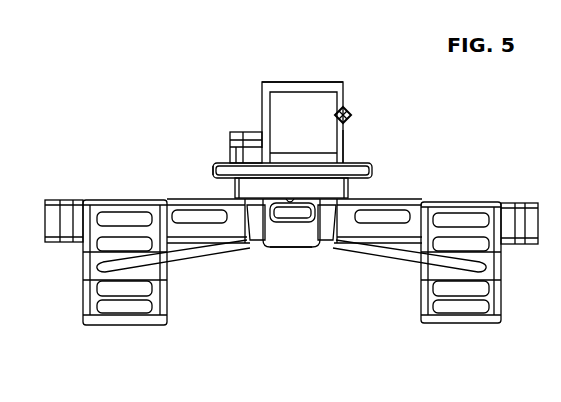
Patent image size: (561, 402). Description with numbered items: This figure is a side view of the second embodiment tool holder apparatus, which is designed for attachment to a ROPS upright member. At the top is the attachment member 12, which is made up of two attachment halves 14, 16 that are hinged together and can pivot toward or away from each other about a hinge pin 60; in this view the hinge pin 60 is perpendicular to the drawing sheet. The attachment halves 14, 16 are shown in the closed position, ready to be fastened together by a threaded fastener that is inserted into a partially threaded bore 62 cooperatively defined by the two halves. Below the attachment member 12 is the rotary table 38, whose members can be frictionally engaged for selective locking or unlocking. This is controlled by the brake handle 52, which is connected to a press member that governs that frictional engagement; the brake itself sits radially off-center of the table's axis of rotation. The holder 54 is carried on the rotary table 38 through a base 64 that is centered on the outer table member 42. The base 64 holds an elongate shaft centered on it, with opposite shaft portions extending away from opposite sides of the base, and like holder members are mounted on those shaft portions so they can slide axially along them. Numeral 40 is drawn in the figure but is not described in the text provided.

The attachment member 12 is at (297, 82).
The attachment half 14 is at (343, 92).
The attachment half 16 is at (343, 148).
The rotary table 38 is at (372, 172).
The flange 40 is at (217, 170).
The outer table member 42 is at (237, 192).
The brake handle 52 is at (287, 222).
The holder 54 is at (463, 200).
The hinge pin 60 is at (348, 111).
The partially threaded bore 62 is at (231, 142).
The base 64 is at (295, 247).